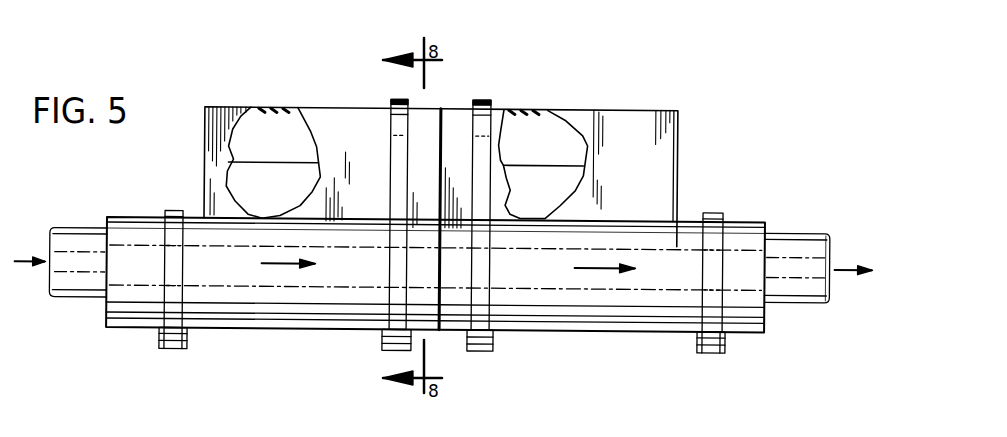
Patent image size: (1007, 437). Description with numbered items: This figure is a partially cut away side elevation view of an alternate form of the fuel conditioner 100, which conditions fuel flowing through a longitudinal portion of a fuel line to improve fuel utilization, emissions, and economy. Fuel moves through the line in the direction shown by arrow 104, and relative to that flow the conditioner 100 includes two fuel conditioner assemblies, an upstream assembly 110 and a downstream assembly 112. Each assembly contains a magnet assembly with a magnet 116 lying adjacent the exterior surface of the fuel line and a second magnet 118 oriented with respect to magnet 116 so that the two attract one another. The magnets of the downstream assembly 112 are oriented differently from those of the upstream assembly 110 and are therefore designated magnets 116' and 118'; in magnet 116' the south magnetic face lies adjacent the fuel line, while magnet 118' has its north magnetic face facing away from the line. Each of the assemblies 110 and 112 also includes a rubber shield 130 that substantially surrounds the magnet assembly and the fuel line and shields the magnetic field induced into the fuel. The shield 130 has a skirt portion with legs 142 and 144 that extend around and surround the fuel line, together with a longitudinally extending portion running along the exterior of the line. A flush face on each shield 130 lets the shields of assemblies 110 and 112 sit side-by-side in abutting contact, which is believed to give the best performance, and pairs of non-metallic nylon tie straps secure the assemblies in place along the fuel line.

The fuel conditioner 100 is at (206, 46).
The arrow 104 is at (277, 263).
The upstream assembly 110 is at (360, 76).
The downstream assembly 112 is at (534, 72).
The magnet 116 is at (240, 189).
The magnet 116' is at (618, 170).
The second magnet 118 is at (241, 163).
The magnet 118' is at (567, 142).
The rubber shield 130 is at (361, 108).
The leg 142 is at (327, 297).
The leg 144 is at (591, 297).